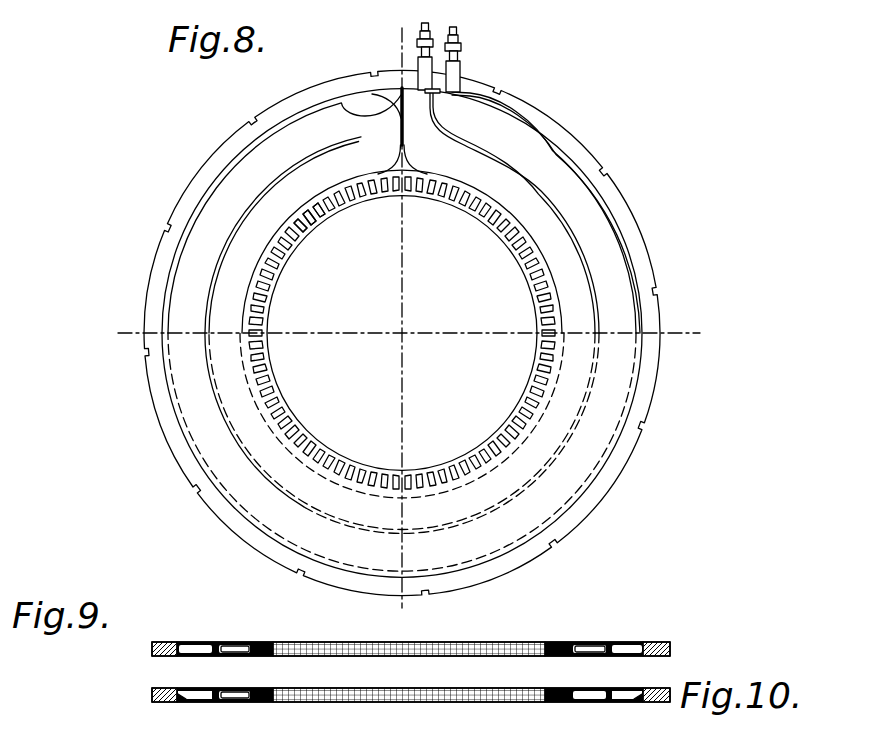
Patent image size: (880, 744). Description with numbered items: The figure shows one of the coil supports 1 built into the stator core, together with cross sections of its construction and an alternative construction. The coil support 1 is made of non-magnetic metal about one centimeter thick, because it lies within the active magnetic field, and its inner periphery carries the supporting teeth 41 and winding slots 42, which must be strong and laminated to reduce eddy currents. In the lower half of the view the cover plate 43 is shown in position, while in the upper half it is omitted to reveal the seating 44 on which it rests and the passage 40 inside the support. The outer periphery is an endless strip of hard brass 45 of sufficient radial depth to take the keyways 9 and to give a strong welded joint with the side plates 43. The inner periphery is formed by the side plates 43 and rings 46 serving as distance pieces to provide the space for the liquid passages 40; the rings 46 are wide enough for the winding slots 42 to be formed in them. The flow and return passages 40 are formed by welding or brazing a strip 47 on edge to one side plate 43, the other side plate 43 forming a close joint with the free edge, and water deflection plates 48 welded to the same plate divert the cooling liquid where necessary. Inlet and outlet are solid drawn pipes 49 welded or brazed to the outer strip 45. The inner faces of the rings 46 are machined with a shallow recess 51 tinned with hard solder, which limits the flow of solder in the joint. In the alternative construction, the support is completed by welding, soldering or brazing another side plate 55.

In FIG. 8, the coil support 1 is at (409, 318).
In FIG. 9, the coil support 1 is at (411, 637).
In FIG. 10, the coil support 1 is at (411, 684).
In FIG. 8, the keyways 9 is at (498, 87).
In FIG. 9, the keyways 9 is at (152, 649).
In FIG. 10, the keyways 9 is at (152, 695).
In FIG. 8, the flow and return passages 40 is at (535, 212).
In FIG. 9, the flow and return passages 40 is at (212, 645).
In FIG. 10, the flow and return passages 40 is at (595, 701).
In FIG. 8, the supporting teeth 41 is at (368, 189).
In FIG. 8, the winding slots 42 is at (323, 211).
In FIG. 8, the side plates 43 is at (205, 444).
In FIG. 9, the side plates 43 is at (190, 645).
In FIG. 10, the side plates 43 is at (200, 675).
In FIG. 8, the seating 44 is at (546, 135).
In FIG. 9, the hard brass strip 45 is at (162, 645).
In FIG. 10, the hard brass strip 45 is at (164, 700).
In FIG. 9, the rings 46 is at (272, 645).
In FIG. 10, the rings 46 is at (272, 689).
In FIG. 8, the strip 47 is at (262, 182).
In FIG. 9, the strip 47 is at (240, 645).
In FIG. 10, the strip 47 is at (235, 690).
In FIG. 8, the water deflection plates 48 is at (343, 92).
In FIG. 8, the pipes 49 is at (437, 15).
In FIG. 9, the shallow recess 51 is at (250, 655).
In FIG. 10, the side plate 55 is at (200, 700).